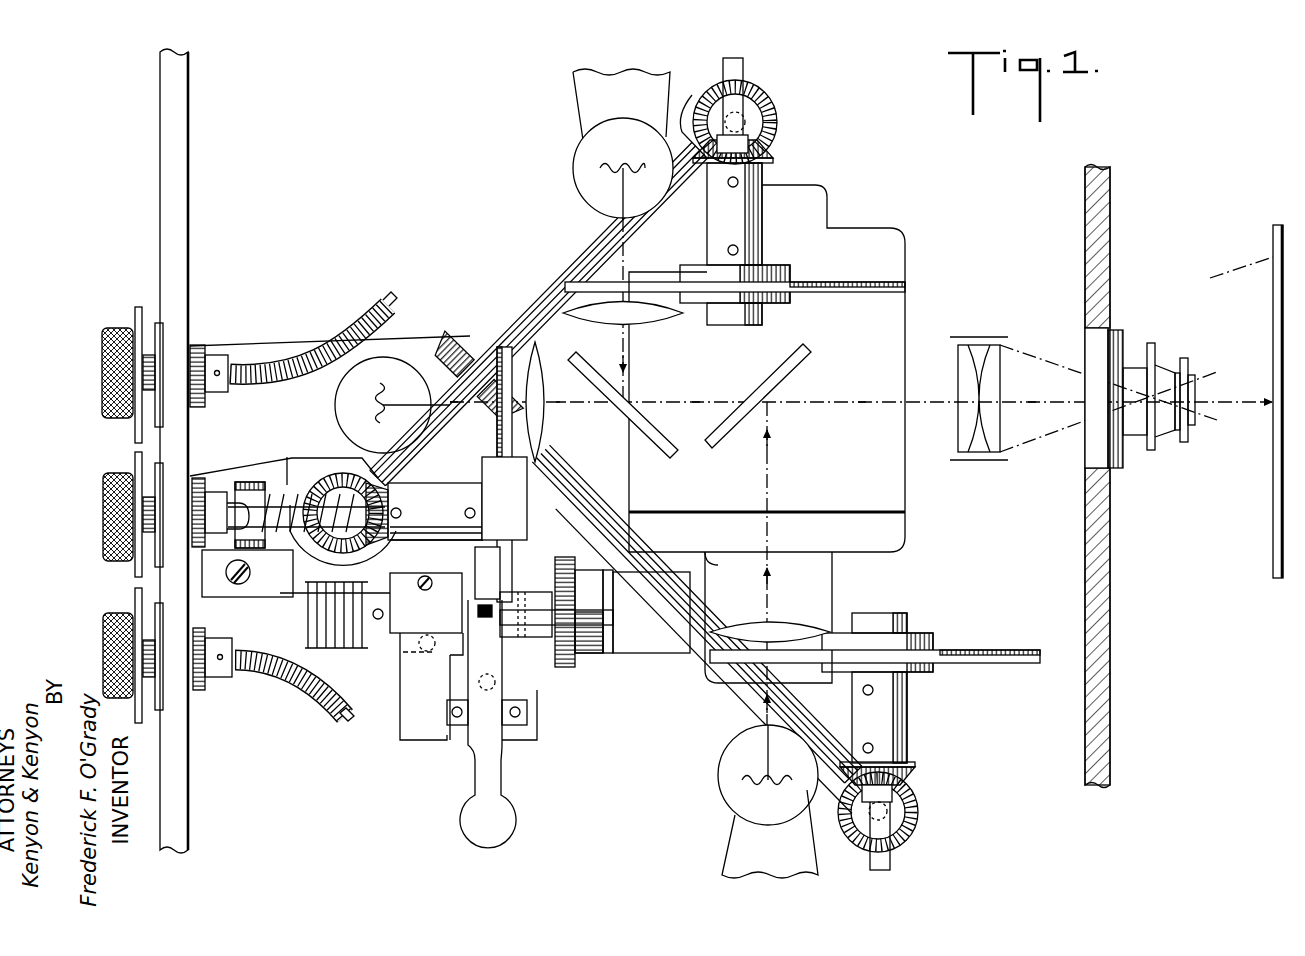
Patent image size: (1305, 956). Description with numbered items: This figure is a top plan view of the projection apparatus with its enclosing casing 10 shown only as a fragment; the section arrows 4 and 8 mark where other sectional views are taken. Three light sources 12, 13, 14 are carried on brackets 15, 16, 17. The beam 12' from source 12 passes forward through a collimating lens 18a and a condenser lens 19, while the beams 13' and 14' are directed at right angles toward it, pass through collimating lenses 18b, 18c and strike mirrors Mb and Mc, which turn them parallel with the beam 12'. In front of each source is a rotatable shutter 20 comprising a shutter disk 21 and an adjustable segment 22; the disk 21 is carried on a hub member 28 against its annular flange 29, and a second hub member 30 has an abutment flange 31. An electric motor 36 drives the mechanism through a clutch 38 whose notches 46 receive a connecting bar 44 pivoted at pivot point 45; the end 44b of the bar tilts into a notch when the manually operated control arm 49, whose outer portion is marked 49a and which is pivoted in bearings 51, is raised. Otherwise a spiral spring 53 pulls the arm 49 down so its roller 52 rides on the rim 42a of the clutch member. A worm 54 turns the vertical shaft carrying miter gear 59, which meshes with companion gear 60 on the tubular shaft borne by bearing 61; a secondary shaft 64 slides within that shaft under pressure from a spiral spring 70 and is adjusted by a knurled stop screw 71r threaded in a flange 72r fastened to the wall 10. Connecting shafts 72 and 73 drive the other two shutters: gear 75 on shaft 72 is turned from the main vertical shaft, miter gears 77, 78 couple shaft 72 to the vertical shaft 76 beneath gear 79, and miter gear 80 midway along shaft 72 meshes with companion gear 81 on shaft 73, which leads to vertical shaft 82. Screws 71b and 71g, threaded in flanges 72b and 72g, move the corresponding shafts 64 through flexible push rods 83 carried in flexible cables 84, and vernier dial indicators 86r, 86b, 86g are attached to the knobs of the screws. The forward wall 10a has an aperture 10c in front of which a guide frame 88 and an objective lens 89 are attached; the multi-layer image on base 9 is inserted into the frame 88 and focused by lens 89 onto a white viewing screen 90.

The section line arrow 4 is at (110, 518).
The section line arrow 8 is at (447, 608).
The base 9 is at (1118, 345).
The enclosing casing 10 is at (180, 243).
The forward wall 10a is at (1108, 540).
The aperture 10c is at (1108, 336).
The light source 12 is at (383, 384).
The light beam 12' is at (521, 365).
The light source 13 is at (608, 172).
The light beam 13' is at (654, 349).
The light source 14 is at (745, 775).
The light beam 14' is at (797, 485).
The bracket 15 is at (243, 356).
The bracket 16 is at (595, 100).
The bracket 17 is at (720, 852).
The collimating lens 18a is at (542, 368).
The collimating lens 18b is at (676, 318).
The collimating lens 18c is at (748, 624).
The condenser lens 19 is at (980, 362).
The rotatable shutter 20 is at (508, 340).
The shutter disk 21 is at (497, 476).
The adjustable segment 22 is at (530, 475).
The hub member 28 is at (930, 694).
The annular flange 29 is at (975, 682).
The second hub member 30 is at (548, 492).
The abutment flange 31 is at (552, 515).
The electric motor 36 is at (897, 495).
The clutch 38 is at (590, 652).
The rim 42a is at (492, 572).
The connecting bar 44 is at (537, 628).
The bar end 44b is at (608, 648).
The pivot point 45 is at (500, 612).
The notches 46 is at (568, 656).
The control arm 49 is at (480, 770).
The lever knob 49a is at (515, 826).
The bearings 51 is at (447, 738).
The roller 52 is at (487, 620).
The spiral spring 53 is at (496, 684).
The worm 54 is at (306, 636).
The miter gear 59 is at (343, 529).
The companion gear 60 is at (932, 760).
The bearing 61 is at (647, 463).
The secondary shaft 64 is at (262, 556).
The spiral spring 70 is at (292, 484).
The knurled stop screw 71b is at (110, 402).
The knurled stop screw 71r is at (108, 565).
The knurled stop screw 71g is at (108, 672).
The connecting shaft 72 is at (575, 282).
The threaded flange 72b is at (198, 345).
The threaded flange 72r is at (197, 480).
The threaded flange 72g is at (198, 690).
The connecting shaft 73 is at (688, 636).
The companion gear 75 is at (345, 462).
The vertical shaft 76 is at (750, 118).
The miter gear 77 is at (692, 114).
The miter gear 78 is at (748, 122).
The gear 79 is at (772, 118).
The miter gear 80 is at (476, 344).
The companion gear 81 is at (470, 456).
The vertical shaft 82 is at (905, 820).
The flexible push rod 83 is at (390, 300).
The flexible cable 84 is at (342, 335).
The vernier dial indicator 86b is at (137, 326).
The vernier dial indicator 86r is at (137, 474).
The vernier dial indicator 86g is at (137, 630).
The guide frame 88 is at (1122, 470).
The objective lens 89 is at (1168, 354).
The viewing screen 90 is at (1270, 566).
The mirror Mb is at (623, 397).
The mirror Mc is at (795, 362).